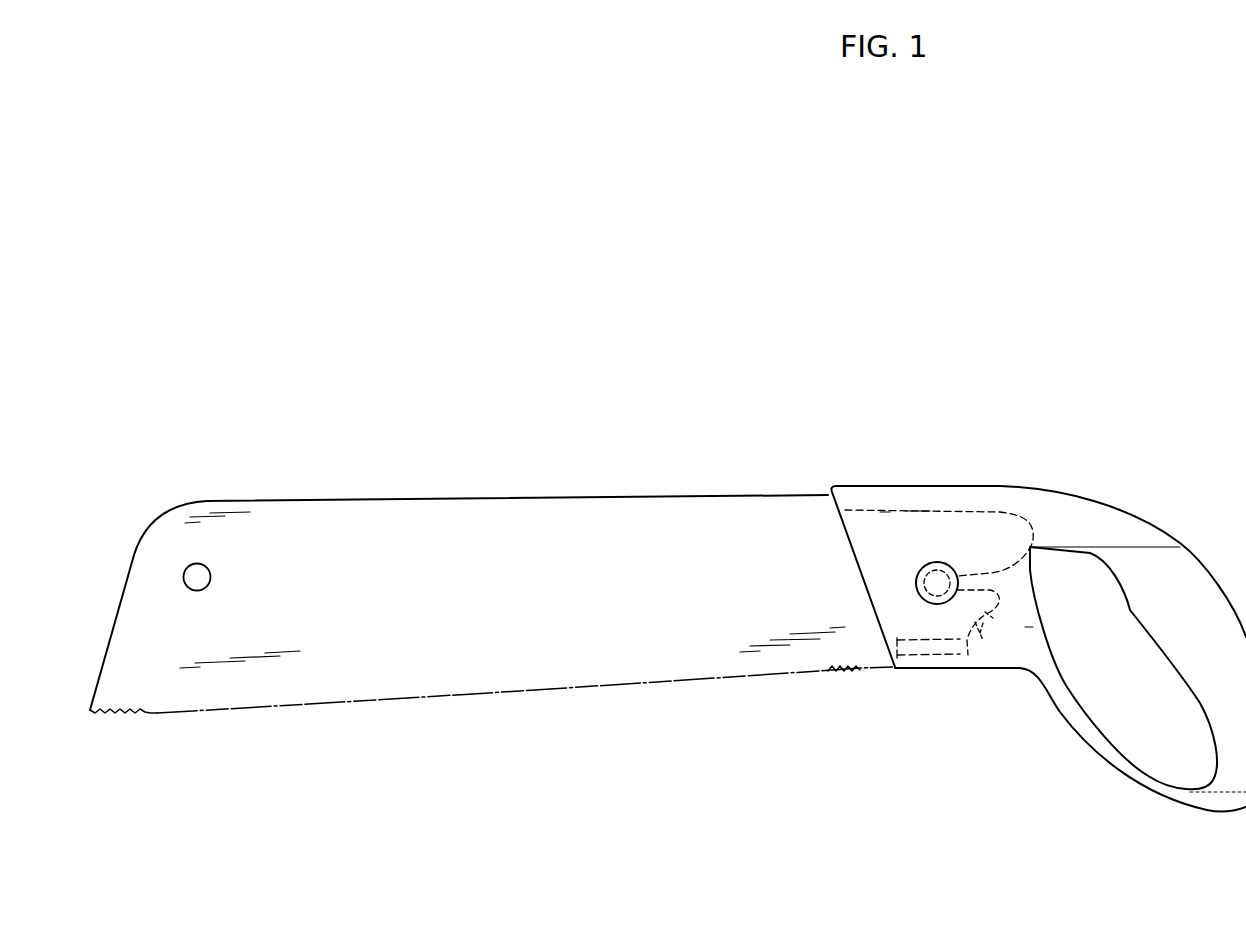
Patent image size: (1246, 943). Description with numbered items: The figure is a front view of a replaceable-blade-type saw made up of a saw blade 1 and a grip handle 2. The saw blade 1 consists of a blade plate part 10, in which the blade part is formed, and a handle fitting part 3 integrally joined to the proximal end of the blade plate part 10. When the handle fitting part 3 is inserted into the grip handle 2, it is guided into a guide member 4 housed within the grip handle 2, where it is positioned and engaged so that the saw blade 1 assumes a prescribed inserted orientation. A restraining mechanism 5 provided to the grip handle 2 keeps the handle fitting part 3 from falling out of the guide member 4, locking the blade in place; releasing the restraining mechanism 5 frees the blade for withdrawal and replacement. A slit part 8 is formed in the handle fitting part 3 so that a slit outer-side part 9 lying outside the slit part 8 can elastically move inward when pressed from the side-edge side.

The saw blade 1 is at (534, 490).
The grip handle 2 is at (1142, 505).
The handle fitting part 3 is at (893, 535).
The guide member 4 is at (941, 499).
The restraining mechanism 5 is at (914, 604).
The slit part 8 is at (964, 645).
The slit outer-side part 9 is at (930, 655).
The blade plate part 10 is at (556, 664).